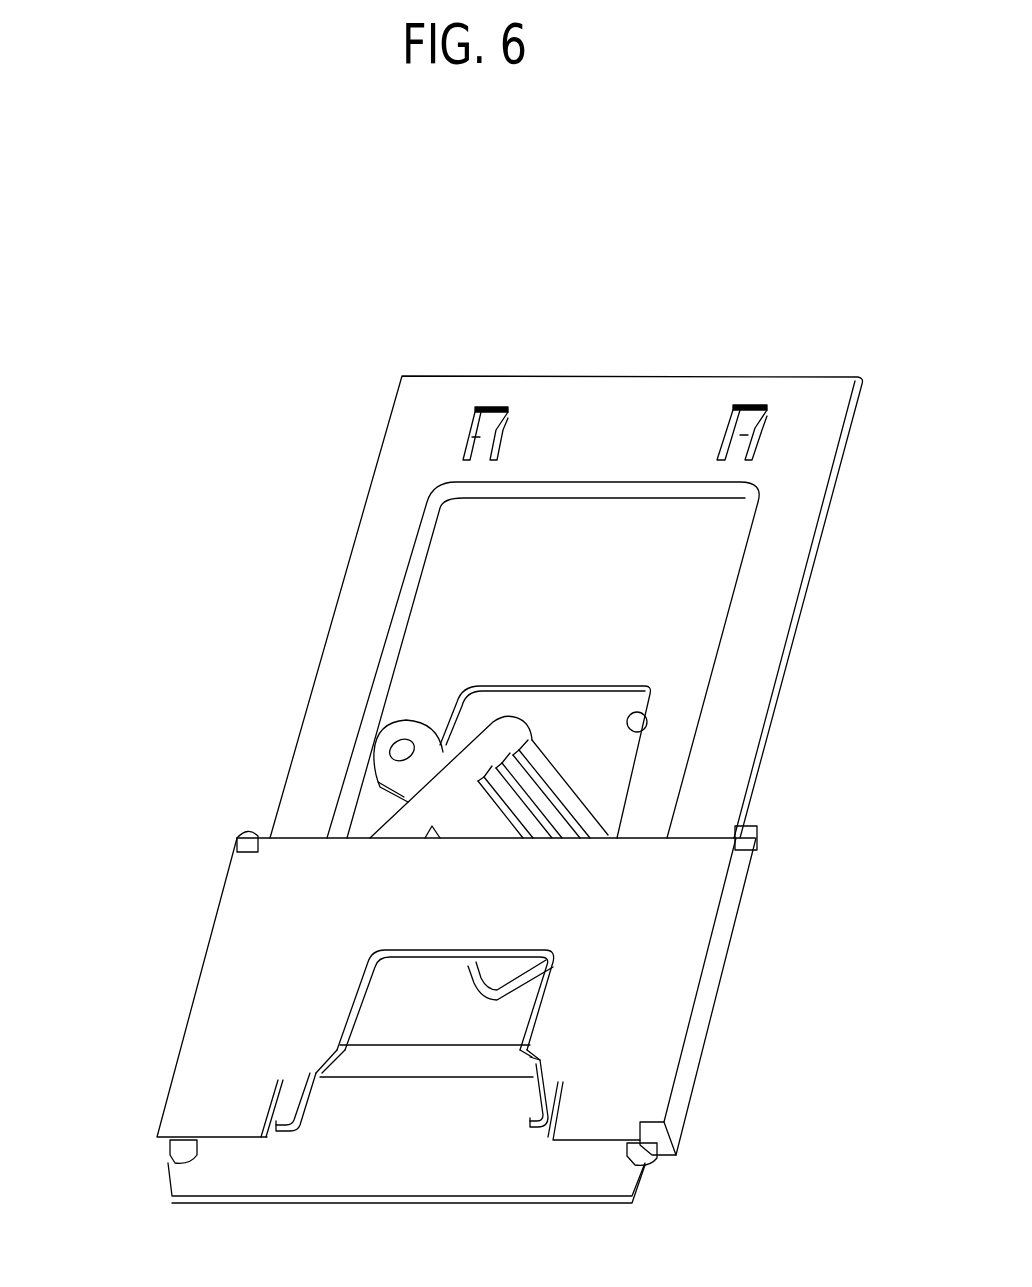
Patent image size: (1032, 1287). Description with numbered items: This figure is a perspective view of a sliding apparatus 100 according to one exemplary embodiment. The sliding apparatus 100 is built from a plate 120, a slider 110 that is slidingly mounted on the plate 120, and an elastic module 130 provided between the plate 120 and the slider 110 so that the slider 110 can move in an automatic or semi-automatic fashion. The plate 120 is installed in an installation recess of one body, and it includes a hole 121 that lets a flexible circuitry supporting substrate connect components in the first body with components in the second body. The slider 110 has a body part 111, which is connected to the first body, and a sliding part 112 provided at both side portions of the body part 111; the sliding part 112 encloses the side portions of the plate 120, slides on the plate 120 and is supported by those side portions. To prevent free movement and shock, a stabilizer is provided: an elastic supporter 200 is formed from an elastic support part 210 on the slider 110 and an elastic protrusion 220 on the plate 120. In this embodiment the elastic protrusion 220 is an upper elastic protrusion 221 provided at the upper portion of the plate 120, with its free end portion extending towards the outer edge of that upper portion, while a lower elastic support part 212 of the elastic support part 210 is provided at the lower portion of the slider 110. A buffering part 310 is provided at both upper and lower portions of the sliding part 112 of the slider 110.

The sliding apparatus 100 is at (565, 257).
The slider 110 is at (760, 948).
The body part 111 is at (672, 1006).
The sliding part 112 is at (690, 1075).
The plate 120 is at (782, 597).
The hole 121 is at (652, 710).
The elastic module 130 is at (594, 795).
The elastic supporter 200 is at (140, 398).
The elastic support part 210 is at (473, 967).
The lower elastic support part 212 is at (414, 1045).
The elastic protrusion 220 is at (735, 418).
The upper elastic protrusion 221 is at (615, 432).
The buffering part 310 is at (762, 838).